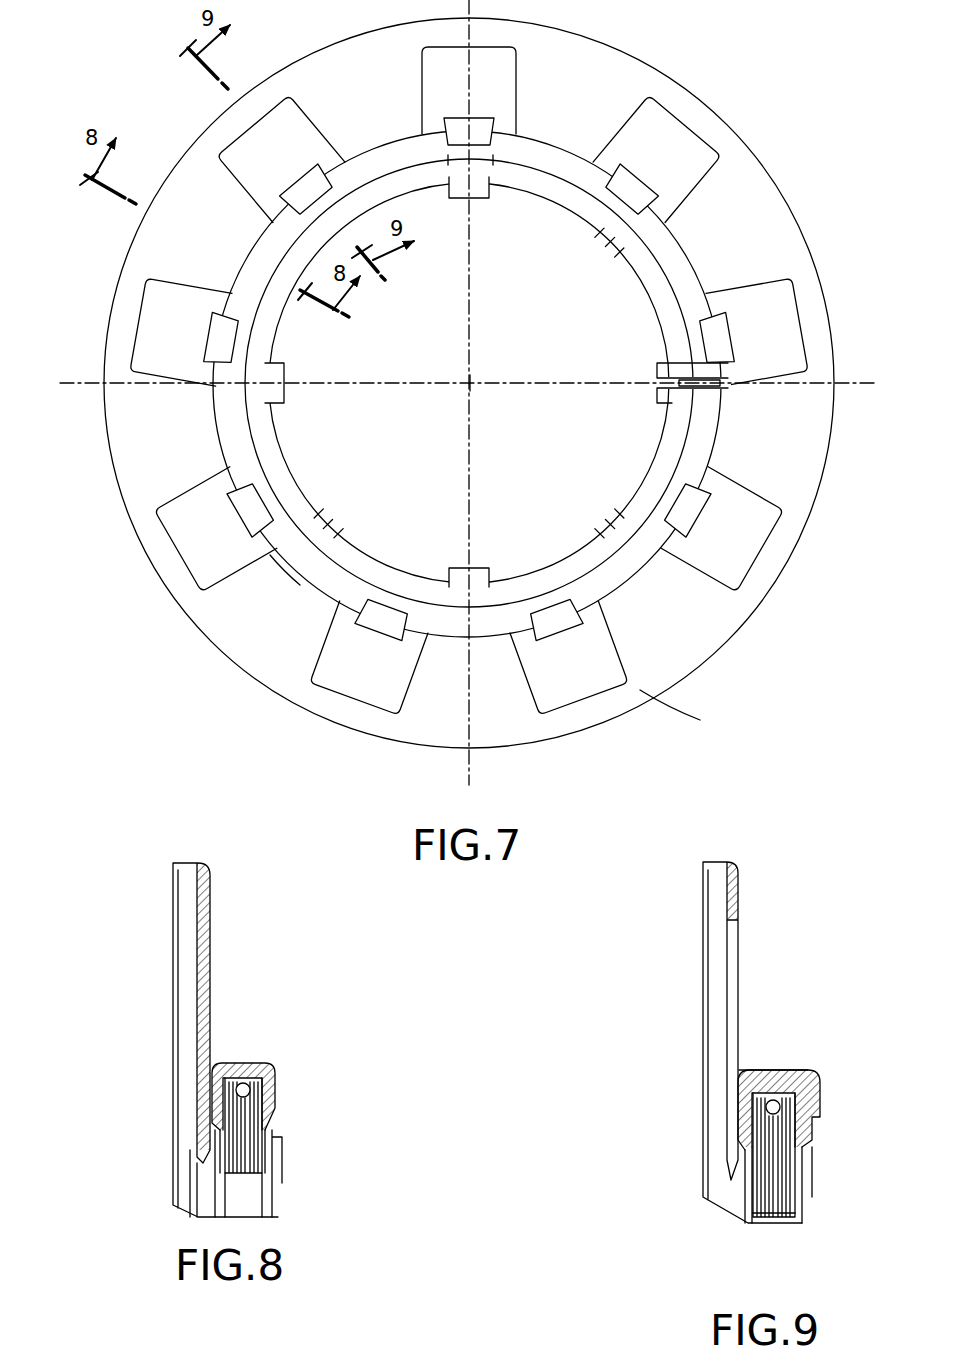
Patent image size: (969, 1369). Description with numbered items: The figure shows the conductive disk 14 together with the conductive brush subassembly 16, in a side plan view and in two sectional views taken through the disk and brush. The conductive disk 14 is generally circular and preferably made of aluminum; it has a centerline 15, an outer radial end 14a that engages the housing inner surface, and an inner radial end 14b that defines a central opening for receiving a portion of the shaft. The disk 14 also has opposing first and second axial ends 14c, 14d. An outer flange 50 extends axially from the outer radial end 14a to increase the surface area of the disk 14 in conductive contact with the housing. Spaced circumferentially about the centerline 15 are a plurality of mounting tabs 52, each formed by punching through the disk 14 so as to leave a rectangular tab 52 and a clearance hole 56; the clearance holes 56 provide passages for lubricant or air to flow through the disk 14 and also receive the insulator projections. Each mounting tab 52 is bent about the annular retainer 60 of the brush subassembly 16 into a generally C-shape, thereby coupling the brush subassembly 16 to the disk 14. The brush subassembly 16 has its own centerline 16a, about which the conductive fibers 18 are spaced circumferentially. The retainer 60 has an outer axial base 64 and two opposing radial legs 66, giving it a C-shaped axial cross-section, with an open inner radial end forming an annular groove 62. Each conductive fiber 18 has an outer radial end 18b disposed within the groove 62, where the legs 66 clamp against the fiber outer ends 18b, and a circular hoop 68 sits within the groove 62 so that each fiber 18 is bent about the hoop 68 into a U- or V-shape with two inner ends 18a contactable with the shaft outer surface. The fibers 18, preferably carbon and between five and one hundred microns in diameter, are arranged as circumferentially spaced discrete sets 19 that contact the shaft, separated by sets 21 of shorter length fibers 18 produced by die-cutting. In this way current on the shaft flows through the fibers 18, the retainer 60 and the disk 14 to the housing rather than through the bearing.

In FIG. 7, the conductive disk 14 is at (427, 383).
In FIG. 8, the conductive disk 14 is at (248, 1040).
In FIG. 9, the conductive disk 14 is at (776, 1042).
In FIG. 7, the outer radial end 14a is at (686, 717).
In FIG. 8, the outer radial end 14a is at (126, 847).
In FIG. 9, the outer radial end 14a is at (651, 855).
In FIG. 8, the inner radial end 14b is at (134, 1121).
In FIG. 7, the first axial end 14c is at (736, 654).
In FIG. 8, the first axial end 14c is at (251, 904).
In FIG. 9, the first axial end 14c is at (775, 900).
In FIG. 8, the second axial end 14d is at (148, 923).
In FIG. 9, the second axial end 14d is at (687, 915).
In FIG. 7, the centerline 15 is at (503, 364).
In FIG. 7, the conductive brush subassembly 16 is at (389, 384).
In FIG. 7, the centerline 16a is at (548, 350).
In FIG. 7, the conductive fibers 18 is at (468, 382).
In FIG. 8, the conductive fibers 18 is at (231, 1179).
In FIG. 9, the conductive fibers 18 is at (768, 1185).
In FIG. 9, the inner end 18a is at (790, 1256).
In FIG. 8, the outer radial end 18b is at (248, 1054).
In FIG. 9, the outer radial end 18b is at (771, 1091).
In FIG. 7, the discrete sets of fibers 19 is at (498, 371).
In FIG. 9, the discrete sets of fibers 19 is at (704, 1242).
In FIG. 7, the sets of shorter length fibers 21 is at (469, 383).
In FIG. 8, the sets of shorter length fibers 21 is at (272, 1168).
In FIG. 8, the outer flange 50 is at (193, 834).
In FIG. 9, the outer flange 50 is at (736, 841).
In FIG. 7, the mounting tabs 52 is at (504, 378).
In FIG. 9, the mounting tabs 52 is at (807, 1035).
In FIG. 7, the clearance holes 56 is at (489, 420).
In FIG. 9, the clearance holes 56 is at (768, 998).
In FIG. 7, the annular retainer 60 is at (254, 590).
In FIG. 8, the annular retainer 60 is at (255, 1052).
In FIG. 9, the annular retainer 60 is at (826, 1103).
In FIG. 9, the annular groove 62 is at (816, 1156).
In FIG. 7, the outer axial base 64 is at (744, 397).
In FIG. 8, the outer axial base 64 is at (240, 1086).
In FIG. 9, the outer axial base 64 is at (774, 1123).
In FIG. 7, the radial legs 66 is at (751, 424).
In FIG. 8, the radial legs 66 is at (238, 1092).
In FIG. 9, the radial legs 66 is at (768, 1121).
In FIG. 8, the circular hoop 68 is at (280, 1062).
In FIG. 9, the circular hoop 68 is at (721, 1087).